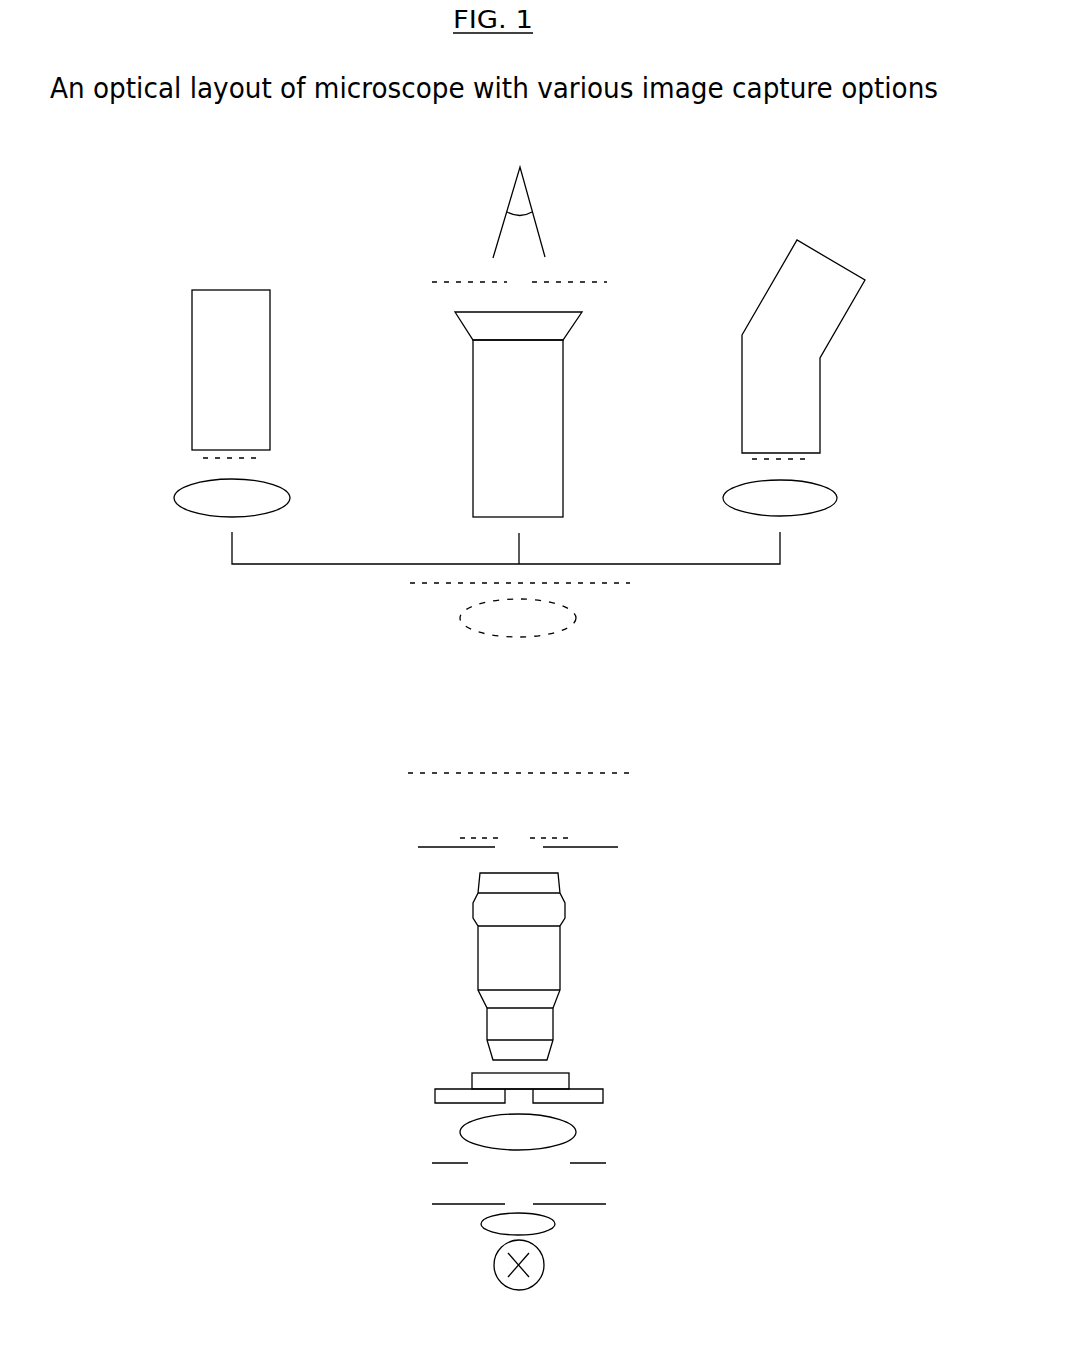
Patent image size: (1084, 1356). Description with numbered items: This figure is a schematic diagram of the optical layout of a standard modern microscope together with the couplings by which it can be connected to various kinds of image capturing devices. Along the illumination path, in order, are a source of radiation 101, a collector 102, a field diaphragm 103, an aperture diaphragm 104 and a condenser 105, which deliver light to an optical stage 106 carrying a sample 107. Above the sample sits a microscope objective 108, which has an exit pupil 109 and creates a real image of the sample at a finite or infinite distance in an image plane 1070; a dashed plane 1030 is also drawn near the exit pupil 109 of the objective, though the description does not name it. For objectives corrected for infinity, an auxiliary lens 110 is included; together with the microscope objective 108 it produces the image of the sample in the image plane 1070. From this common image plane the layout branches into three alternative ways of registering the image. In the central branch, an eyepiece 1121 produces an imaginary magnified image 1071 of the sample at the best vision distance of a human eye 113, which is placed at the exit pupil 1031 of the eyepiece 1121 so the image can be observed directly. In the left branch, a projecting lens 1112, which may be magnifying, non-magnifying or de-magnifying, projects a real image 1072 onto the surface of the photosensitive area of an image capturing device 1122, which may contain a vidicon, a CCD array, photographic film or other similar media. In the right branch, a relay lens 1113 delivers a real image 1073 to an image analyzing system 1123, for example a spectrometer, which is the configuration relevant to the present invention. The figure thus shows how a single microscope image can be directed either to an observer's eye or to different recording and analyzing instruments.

The source of radiation 101 is at (581, 1265).
The collector 102 is at (574, 1232).
The field diaphragm 103 is at (550, 1202).
The aperture diaphragm 104 is at (550, 1163).
The condenser 105 is at (564, 1131).
The optical stage 106 is at (551, 1093).
The sample 107 is at (570, 1072).
The microscope objective 108 is at (570, 966).
The exit pupil 109 is at (554, 863).
The back focal plane 1030 is at (583, 832).
The imaginary magnified image 1071 is at (557, 773).
The auxiliary lens 110 is at (474, 618).
The image plane 1070 is at (555, 583).
The projecting lens 1112 is at (195, 498).
The eyepiece 1121 is at (497, 438).
The relay lens 1113 is at (740, 498).
The real image 1072 is at (272, 458).
The real image 1073 is at (821, 453).
The image capturing device 1122 is at (209, 354).
The image analyzing system 1123 is at (782, 346).
The exit pupil 1031 is at (550, 282).
The human eye 113 is at (499, 197).